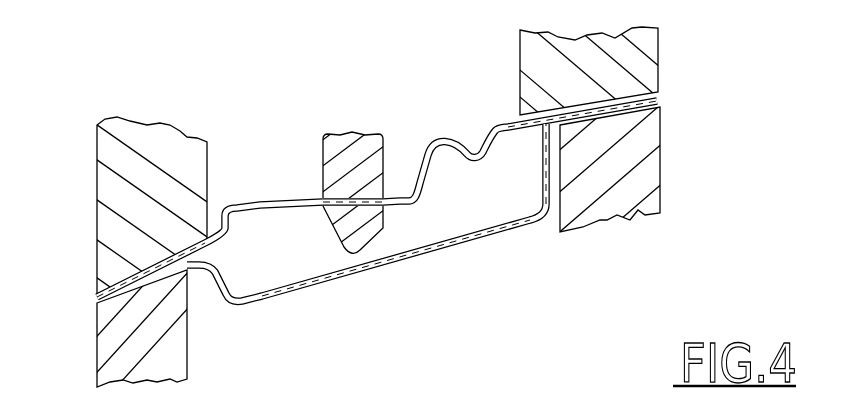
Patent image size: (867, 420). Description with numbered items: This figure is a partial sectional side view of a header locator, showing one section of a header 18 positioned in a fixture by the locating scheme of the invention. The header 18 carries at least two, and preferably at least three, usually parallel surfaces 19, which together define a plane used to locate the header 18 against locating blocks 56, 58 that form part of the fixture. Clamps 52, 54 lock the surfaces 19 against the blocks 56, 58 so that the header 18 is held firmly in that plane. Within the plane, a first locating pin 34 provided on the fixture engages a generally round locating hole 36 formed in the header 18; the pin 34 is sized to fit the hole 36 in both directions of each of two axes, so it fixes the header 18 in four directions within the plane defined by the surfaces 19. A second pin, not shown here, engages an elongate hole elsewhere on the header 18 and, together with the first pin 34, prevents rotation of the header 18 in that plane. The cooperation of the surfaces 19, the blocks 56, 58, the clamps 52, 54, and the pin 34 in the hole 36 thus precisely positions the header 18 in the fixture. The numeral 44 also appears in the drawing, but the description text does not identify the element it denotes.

The header 18 is at (452, 247).
The surfaces 19 is at (157, 275).
The first locating pin 34 is at (372, 228).
The locating hole 36 is at (387, 202).
The member 44 is at (154, 4).
The clamp 52 is at (173, 362).
The clamp 54 is at (610, 213).
The locating block 56 is at (97, 212).
The locating block 58 is at (660, 50).